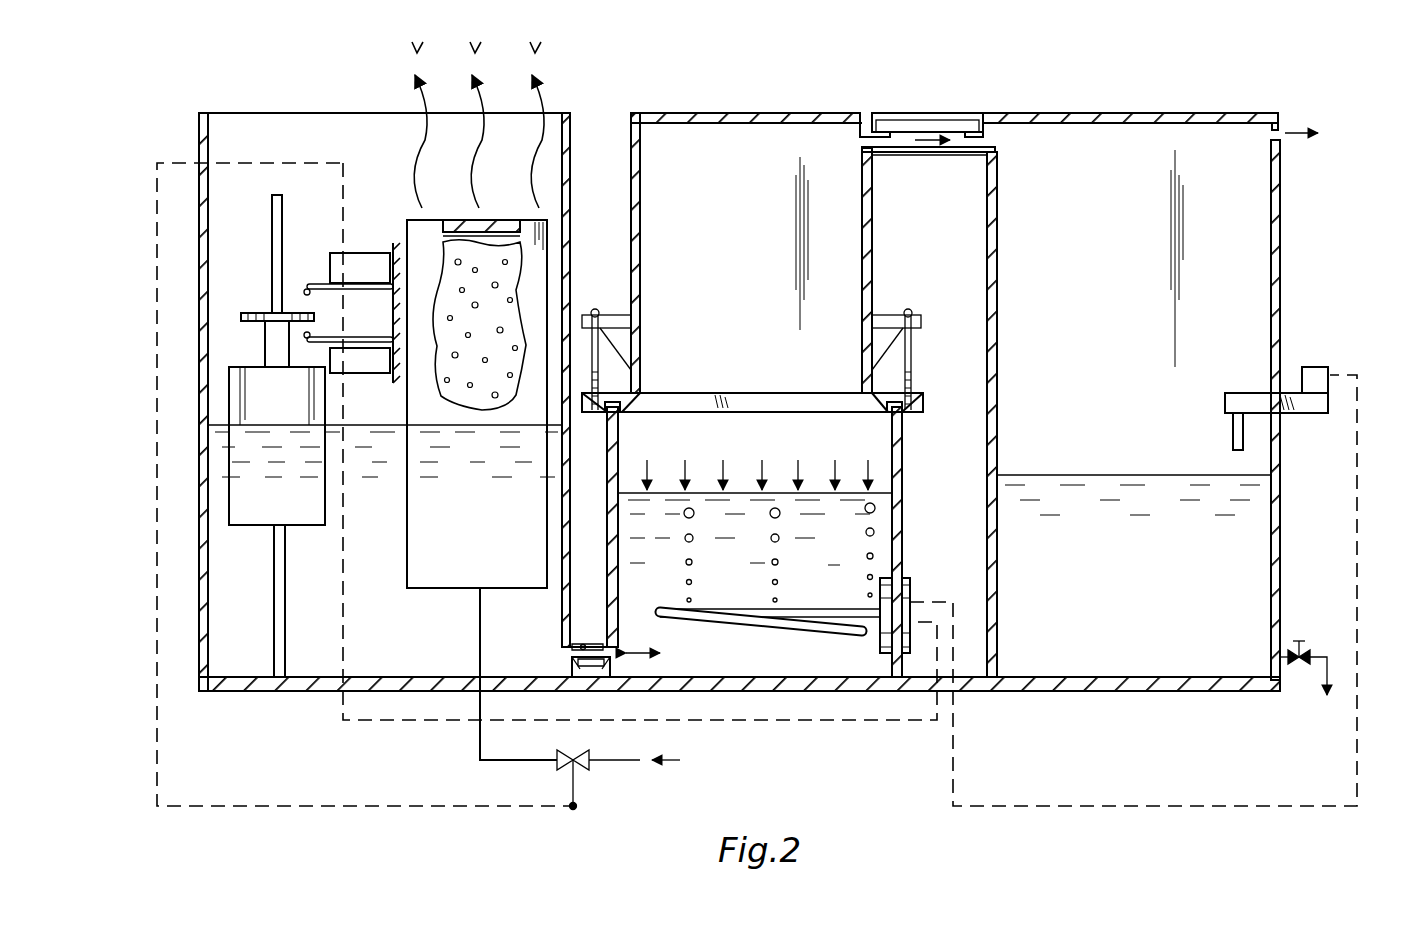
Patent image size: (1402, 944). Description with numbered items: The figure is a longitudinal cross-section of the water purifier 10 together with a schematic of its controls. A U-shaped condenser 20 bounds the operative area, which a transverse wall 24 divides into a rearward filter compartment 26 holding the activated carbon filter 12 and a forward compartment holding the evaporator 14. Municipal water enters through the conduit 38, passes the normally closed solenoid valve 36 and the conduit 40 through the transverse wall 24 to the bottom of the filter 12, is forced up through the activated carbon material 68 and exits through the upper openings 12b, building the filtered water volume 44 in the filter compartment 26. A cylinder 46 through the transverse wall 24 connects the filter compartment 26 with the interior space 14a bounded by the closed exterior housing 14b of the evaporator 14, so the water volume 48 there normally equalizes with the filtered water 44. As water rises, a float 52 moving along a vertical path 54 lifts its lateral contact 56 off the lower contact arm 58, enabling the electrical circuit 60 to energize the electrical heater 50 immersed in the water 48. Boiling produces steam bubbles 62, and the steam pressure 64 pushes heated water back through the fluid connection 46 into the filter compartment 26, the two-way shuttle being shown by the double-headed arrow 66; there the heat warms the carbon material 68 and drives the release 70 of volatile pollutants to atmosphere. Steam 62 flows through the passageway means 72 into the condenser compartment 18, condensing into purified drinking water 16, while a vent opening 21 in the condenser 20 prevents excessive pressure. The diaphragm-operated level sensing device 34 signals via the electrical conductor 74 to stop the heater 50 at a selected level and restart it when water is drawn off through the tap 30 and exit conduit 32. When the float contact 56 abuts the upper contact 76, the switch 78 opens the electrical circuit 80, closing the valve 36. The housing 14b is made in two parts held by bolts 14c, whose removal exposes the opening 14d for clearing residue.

The water purifier 10 is at (823, 68).
The activated carbon filter 12 is at (548, 258).
The upper openings 12b is at (454, 220).
The evaporator 14 is at (880, 236).
The interior space of the evaporator 14a is at (852, 290).
The exterior housing of the evaporator 14b is at (874, 264).
The bolts 14c is at (582, 340).
The opening 14d is at (657, 400).
The purified drinking water 16 is at (1130, 475).
The condenser compartment 18 is at (1287, 232).
The U-shaped condenser 20 is at (1150, 258).
The vent opening 21 is at (1289, 133).
The transverse wall 24 is at (571, 213).
The filter compartment 26 is at (385, 287).
The tap 30 is at (1303, 650).
The exit conduit 32 is at (1318, 668).
The diaphragm-operated level sensing device 34 is at (1325, 366).
The normally closed valve 36 is at (582, 752).
The conduit 38 is at (627, 763).
The conduit 40 is at (480, 657).
The filtered water volume 44 is at (360, 412).
The cylinder 46 is at (586, 640).
The water level build-up in the evaporator 48 is at (737, 505).
The electrical heater 50 is at (757, 628).
The float 52 is at (277, 499).
The vertical path 54 is at (272, 252).
The laterally extending contact 56 is at (308, 320).
The lower electrical contact arm 58 is at (312, 337).
The electrical circuit 60 is at (343, 647).
The bubbles 62 is at (923, 505).
The steam pressure 64 is at (835, 470).
The double-headed arrow 66 is at (645, 638).
The activated carbon material 68 is at (505, 325).
The release 70 is at (420, 98).
The passageway means 72 is at (935, 113).
The electrical conductor 74 is at (1359, 554).
The upper electrical contact 76 is at (305, 288).
The switch 78 is at (365, 313).
The electrical circuit 80 is at (157, 458).